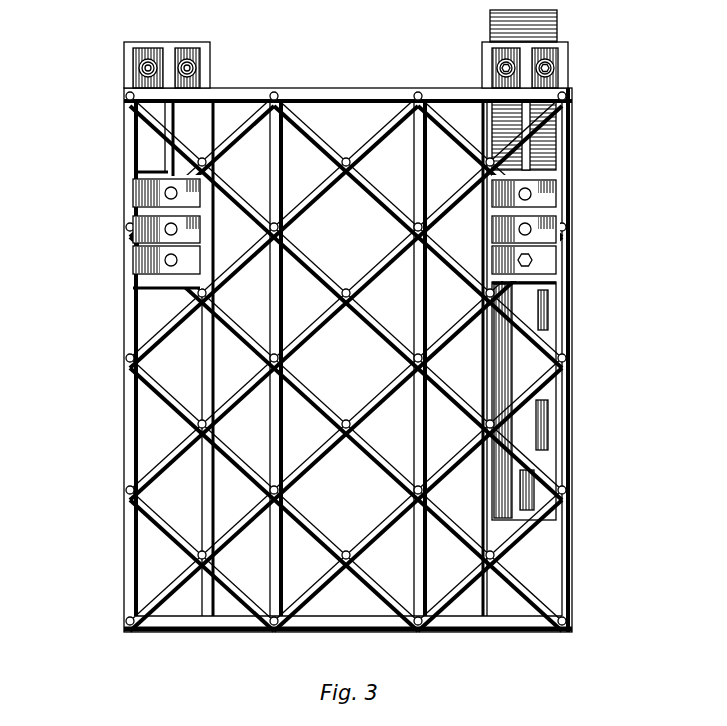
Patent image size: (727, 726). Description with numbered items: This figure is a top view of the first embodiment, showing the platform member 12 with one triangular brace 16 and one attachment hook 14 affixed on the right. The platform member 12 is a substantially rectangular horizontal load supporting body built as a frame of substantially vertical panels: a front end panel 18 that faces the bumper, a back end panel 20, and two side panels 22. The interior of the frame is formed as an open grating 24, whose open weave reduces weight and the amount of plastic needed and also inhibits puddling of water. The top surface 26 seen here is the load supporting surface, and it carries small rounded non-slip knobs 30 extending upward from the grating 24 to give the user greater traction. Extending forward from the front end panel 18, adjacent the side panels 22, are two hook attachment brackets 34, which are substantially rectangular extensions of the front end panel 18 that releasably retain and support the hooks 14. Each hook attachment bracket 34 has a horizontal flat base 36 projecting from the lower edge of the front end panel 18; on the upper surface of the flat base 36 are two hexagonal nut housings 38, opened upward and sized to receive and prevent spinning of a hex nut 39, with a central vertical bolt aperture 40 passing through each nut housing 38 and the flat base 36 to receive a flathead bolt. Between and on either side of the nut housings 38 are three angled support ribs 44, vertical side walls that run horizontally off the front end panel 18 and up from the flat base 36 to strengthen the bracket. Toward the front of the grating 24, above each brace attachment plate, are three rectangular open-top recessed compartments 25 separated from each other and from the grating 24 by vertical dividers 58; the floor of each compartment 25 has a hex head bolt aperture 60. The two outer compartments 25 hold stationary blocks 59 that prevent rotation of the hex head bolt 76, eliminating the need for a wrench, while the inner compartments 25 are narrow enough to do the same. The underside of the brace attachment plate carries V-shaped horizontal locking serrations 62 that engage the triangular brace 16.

The platform member 12 is at (563, 308).
The attachment hook 14 is at (548, 30).
The triangular brace 16 is at (545, 135).
The front end panel 18 is at (333, 90).
The back end panel 20 is at (470, 633).
The side panel 22 is at (123, 135).
The open grating 24 is at (383, 255).
The recessed compartment 25 is at (547, 228).
The top surface 26 is at (205, 357).
The non-slip knob 30 is at (352, 160).
The hook attachment bracket 34 is at (205, 44).
The flat base 36 is at (149, 59).
The nut housing 38 is at (143, 77).
The hex nut 39 is at (493, 63).
The bolt aperture 40 is at (146, 62).
The angled support rib 44 is at (168, 57).
The divider 58 is at (180, 173).
The stationary block 59 is at (173, 183).
The hex head bolt aperture 60 is at (168, 196).
The locking serration 62 is at (545, 155).
The hex head bolt 76 is at (533, 263).